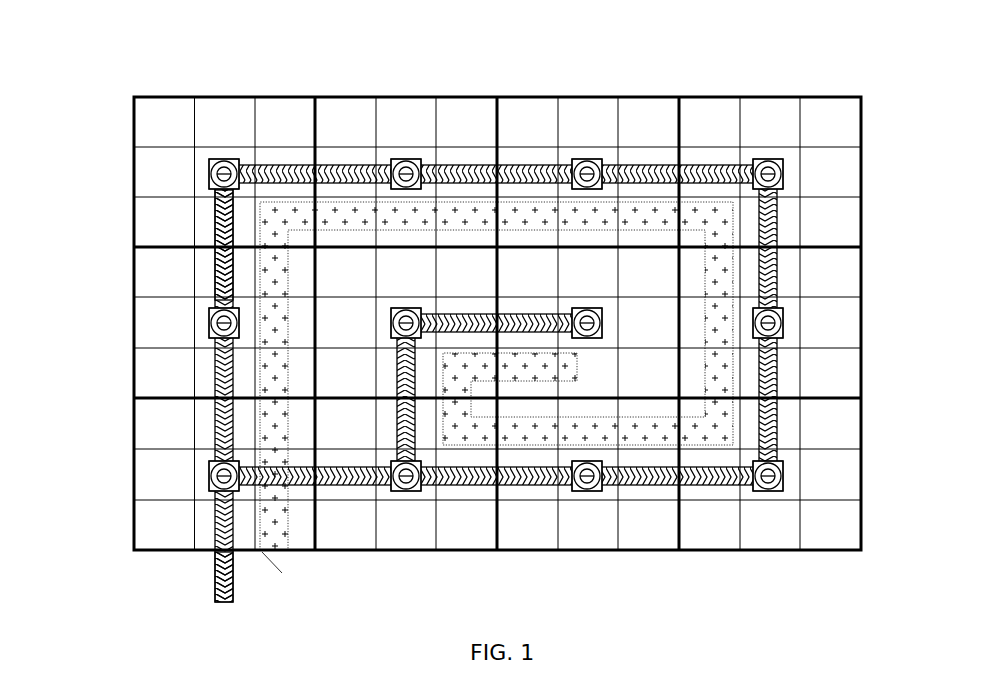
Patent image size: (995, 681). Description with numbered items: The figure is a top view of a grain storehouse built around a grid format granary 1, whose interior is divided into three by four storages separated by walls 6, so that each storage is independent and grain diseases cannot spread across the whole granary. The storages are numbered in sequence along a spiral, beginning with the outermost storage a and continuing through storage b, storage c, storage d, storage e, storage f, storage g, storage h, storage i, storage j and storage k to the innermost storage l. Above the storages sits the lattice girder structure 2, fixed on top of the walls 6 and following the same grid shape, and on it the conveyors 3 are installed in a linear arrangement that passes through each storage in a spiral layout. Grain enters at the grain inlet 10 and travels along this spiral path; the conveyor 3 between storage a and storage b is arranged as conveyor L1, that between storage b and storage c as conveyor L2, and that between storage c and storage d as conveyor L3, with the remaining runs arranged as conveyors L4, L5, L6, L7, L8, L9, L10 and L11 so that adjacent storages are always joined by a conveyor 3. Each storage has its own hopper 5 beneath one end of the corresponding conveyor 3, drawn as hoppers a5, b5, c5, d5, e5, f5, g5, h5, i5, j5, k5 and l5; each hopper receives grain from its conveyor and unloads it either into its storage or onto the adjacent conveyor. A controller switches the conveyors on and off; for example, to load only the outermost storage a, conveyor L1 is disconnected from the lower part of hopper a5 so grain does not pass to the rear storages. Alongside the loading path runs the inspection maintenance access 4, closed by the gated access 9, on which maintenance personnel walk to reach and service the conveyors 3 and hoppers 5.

The granary 1 is at (165, 445).
The lattice girder structure 2 is at (157, 305).
The conveyor 3 is at (214, 233).
The inspection maintenance access 4 is at (735, 406).
The hopper 5 is at (790, 168).
The wall 6 is at (446, 92).
The gated access 9 is at (283, 555).
The grain inlet 10 is at (216, 570).
The storage a is at (150, 498).
The storage b is at (133, 340).
The storage c is at (180, 95).
The storage d is at (377, 97).
The storage e is at (617, 160).
The storage f is at (826, 97).
The storage g is at (861, 268).
The storage h is at (863, 518).
The storage i is at (596, 490).
The storage j is at (473, 552).
The storage k is at (358, 318).
The storage l is at (614, 288).
The hopper a5 is at (243, 472).
The hopper b5 is at (213, 313).
The hopper c5 is at (215, 168).
The hopper d5 is at (406, 159).
The hopper e5 is at (586, 162).
The hopper f5 is at (765, 162).
The hopper g5 is at (783, 322).
The hopper h5 is at (780, 490).
The hopper i5 is at (600, 483).
The hopper j5 is at (420, 483).
The hopper k5 is at (410, 318).
The hopper l5 is at (593, 335).
The conveyor L1 is at (218, 432).
The conveyor L2 is at (213, 210).
The conveyor L3 is at (282, 167).
The conveyor L4 is at (505, 165).
The conveyor L5 is at (692, 167).
The conveyor L6 is at (778, 218).
The conveyor L7 is at (777, 393).
The conveyor L8 is at (700, 487).
The conveyor L9 is at (470, 483).
The conveyor L10 is at (413, 405).
The conveyor L11 is at (553, 315).